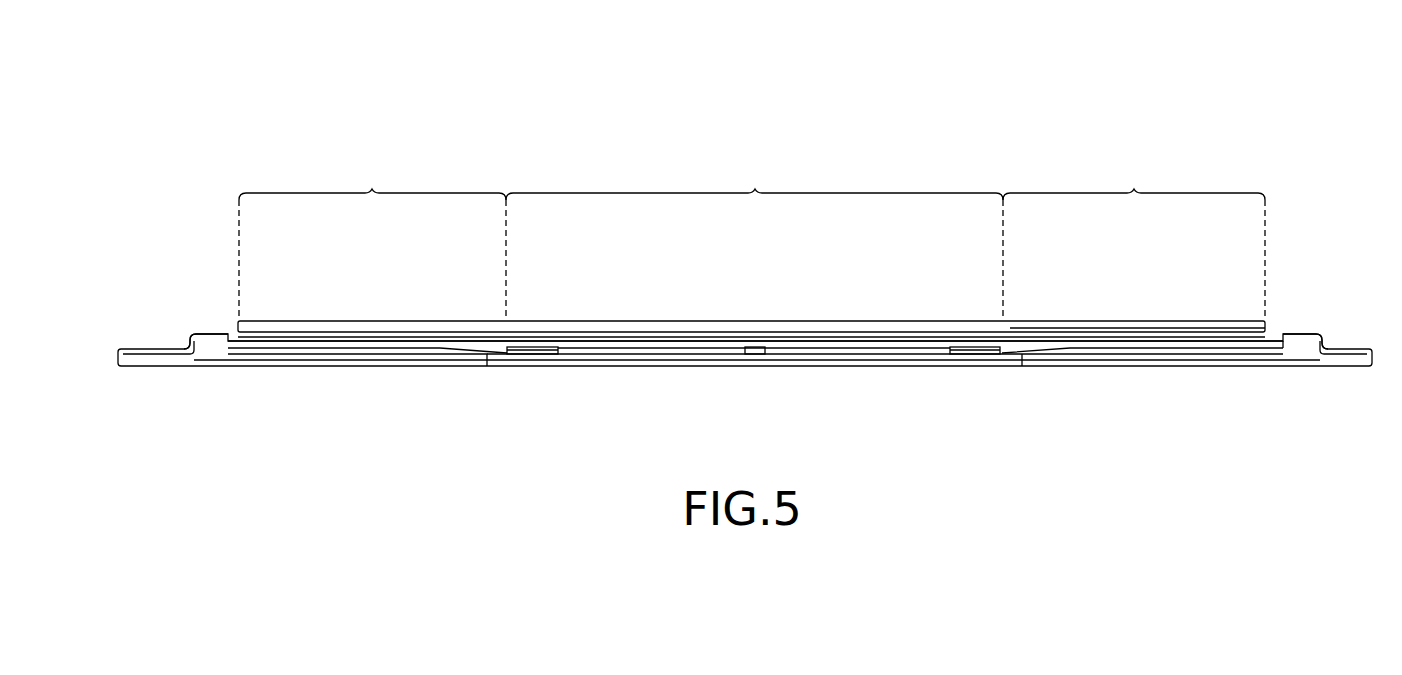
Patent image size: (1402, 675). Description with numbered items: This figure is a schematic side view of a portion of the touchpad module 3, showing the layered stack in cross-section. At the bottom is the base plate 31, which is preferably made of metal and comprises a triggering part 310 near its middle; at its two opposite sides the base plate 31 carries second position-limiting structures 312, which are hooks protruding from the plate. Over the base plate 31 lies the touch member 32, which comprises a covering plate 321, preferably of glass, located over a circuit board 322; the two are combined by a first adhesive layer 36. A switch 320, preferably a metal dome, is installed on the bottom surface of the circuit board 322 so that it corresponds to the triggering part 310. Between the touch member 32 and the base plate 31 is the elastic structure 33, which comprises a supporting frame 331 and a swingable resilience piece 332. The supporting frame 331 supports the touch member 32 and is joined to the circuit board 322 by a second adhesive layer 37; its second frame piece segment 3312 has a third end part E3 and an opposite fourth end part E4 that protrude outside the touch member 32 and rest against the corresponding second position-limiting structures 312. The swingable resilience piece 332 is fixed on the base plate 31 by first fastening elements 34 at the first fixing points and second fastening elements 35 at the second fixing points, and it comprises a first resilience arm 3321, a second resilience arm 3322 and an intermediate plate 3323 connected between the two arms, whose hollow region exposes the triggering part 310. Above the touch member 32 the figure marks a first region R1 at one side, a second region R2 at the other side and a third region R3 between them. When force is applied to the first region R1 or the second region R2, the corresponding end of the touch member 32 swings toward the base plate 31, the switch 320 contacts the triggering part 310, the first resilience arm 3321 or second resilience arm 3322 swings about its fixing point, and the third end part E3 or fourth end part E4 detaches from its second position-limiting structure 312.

The touchpad module 3 is at (1227, 86).
The base plate 31 is at (153, 362).
The triggering part 310 is at (762, 348).
The second position-limiting structure 312 is at (211, 333).
The touch member 32 is at (308, 20).
The switch 320 is at (752, 341).
The covering plate 321 is at (822, 326).
The circuit board 322 is at (900, 333).
The elastic structure 33 is at (454, 20).
The supporting frame 331 is at (476, 24).
The swingable resilience piece 332 is at (516, 58).
The second frame piece segment 3312 is at (268, 342).
The first resilience arm 3321 is at (374, 349).
The second resilience arm 3322 is at (1130, 348).
The intermediate plate 3323 is at (657, 353).
The first fastening element 34 is at (532, 348).
The second fastening element 35 is at (978, 348).
The first adhesive layer 36 is at (1118, 328).
The second adhesive layer 37 is at (1228, 345).
The third end part E3 is at (200, 343).
The fourth end part E4 is at (1300, 348).
The first region R1 is at (372, 238).
The second region R2 is at (1134, 238).
The third region R3 is at (754, 238).